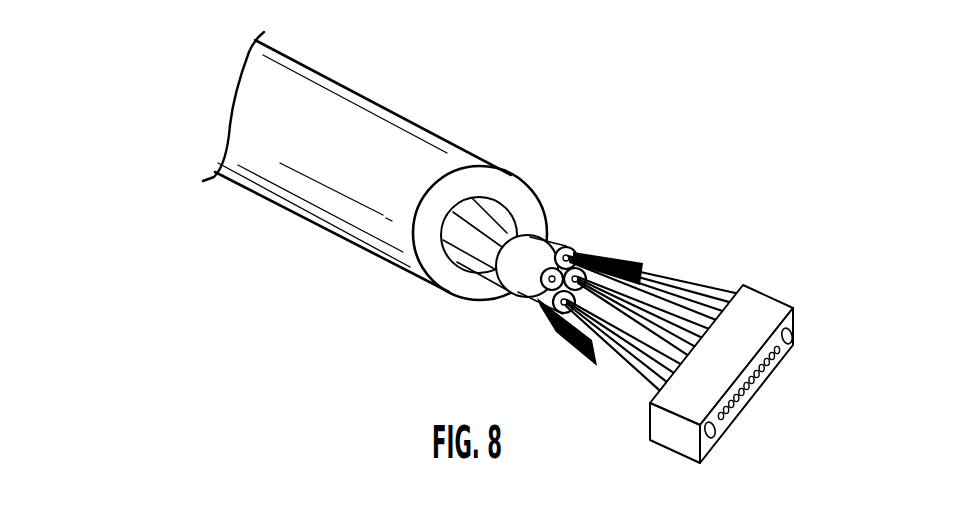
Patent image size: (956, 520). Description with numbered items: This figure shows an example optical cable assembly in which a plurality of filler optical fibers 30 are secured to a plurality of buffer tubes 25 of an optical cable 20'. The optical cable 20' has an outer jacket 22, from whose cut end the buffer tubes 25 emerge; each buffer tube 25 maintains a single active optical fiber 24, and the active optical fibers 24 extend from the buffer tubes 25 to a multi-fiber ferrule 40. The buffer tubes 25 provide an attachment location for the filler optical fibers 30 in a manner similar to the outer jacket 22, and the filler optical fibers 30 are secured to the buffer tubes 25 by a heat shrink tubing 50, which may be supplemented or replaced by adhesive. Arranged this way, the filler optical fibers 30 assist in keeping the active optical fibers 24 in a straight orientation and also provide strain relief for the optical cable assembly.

The optical cable 20' is at (542, 39).
The outer jacket 22 is at (372, 102).
The active optical fibers 24 is at (688, 305).
The buffer tubes 25 is at (500, 220).
The filler optical fibers 30 is at (634, 250).
The multi-fiber ferrule 40 is at (673, 435).
The heat shrink tubing 50 is at (498, 292).